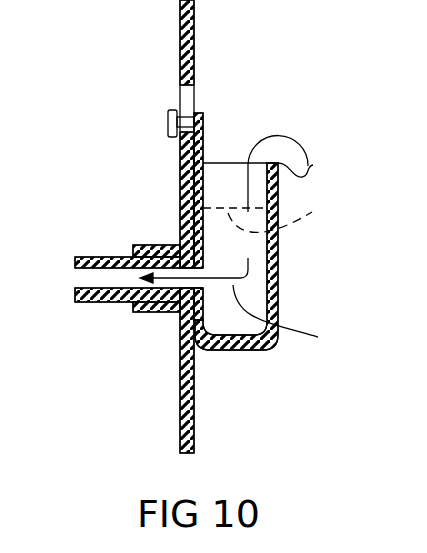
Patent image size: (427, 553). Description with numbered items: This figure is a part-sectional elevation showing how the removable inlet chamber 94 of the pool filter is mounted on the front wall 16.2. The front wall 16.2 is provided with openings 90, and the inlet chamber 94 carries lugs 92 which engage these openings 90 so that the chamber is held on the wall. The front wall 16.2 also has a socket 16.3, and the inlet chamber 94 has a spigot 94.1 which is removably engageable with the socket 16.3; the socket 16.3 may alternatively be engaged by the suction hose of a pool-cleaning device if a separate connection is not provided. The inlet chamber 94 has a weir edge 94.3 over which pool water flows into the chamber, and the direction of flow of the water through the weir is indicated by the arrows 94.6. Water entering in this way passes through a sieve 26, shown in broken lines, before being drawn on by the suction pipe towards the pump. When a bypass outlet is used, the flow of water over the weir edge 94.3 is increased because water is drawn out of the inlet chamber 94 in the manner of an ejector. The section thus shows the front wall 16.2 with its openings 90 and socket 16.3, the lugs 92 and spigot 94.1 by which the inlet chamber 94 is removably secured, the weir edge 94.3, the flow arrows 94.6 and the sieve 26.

The front wall 16.2 is at (195, 72).
The openings 90 is at (195, 100).
The lugs 92 is at (168, 123).
The socket 16.3 is at (122, 315).
The spigot 94.1 is at (178, 304).
The removable inlet chamber 94 is at (236, 357).
The weir edge 94.3 is at (313, 165).
The arrows 94.6 is at (283, 138).
The sieve 26 is at (312, 212).